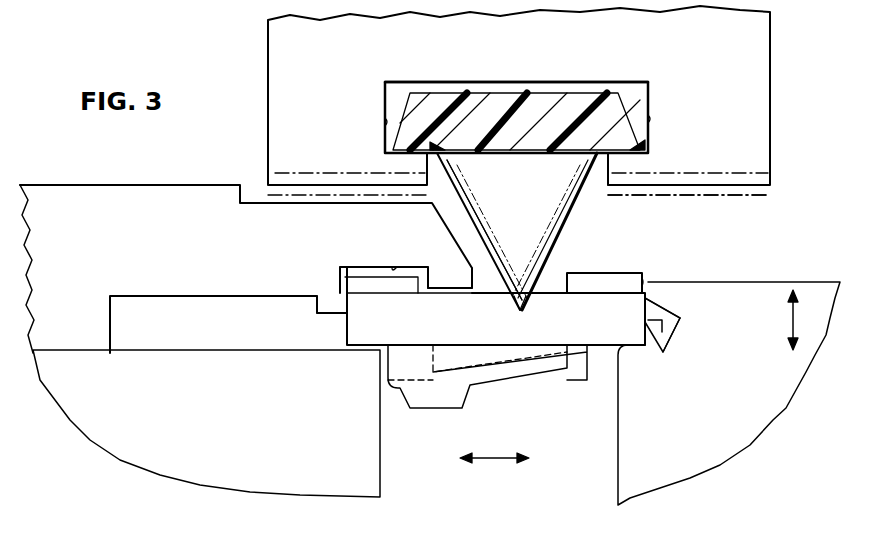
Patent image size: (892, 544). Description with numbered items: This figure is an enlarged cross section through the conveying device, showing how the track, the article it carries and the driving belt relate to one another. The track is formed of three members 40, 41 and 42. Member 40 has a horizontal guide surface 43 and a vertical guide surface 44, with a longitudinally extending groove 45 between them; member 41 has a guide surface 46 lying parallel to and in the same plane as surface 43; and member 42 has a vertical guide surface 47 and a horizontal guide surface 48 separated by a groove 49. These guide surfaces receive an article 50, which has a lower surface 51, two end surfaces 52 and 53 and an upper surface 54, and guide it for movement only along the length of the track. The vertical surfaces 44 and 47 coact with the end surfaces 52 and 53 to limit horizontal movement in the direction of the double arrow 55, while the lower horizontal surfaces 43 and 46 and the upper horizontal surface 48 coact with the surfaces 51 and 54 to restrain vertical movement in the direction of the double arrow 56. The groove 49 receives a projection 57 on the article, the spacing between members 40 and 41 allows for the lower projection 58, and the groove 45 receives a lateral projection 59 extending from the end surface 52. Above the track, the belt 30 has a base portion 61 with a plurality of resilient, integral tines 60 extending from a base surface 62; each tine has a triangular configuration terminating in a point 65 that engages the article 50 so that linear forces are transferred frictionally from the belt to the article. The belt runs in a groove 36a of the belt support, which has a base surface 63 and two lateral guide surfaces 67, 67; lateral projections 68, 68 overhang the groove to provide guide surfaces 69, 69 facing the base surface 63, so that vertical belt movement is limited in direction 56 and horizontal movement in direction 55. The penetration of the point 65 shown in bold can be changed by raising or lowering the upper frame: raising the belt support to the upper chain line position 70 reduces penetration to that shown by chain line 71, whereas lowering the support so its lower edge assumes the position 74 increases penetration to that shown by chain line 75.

The belt 30 is at (523, 114).
The groove 36a is at (385, 100).
The member 40 is at (730, 427).
The member 41 is at (285, 440).
The member 42 is at (200, 250).
The horizontal guide surface 43 is at (641, 347).
The vertical guide surface 44 is at (646, 280).
The groove 45 is at (680, 318).
The guide surface 46 is at (252, 354).
The vertical guide surface 47 is at (347, 277).
The horizontal guide surface 48 is at (440, 290).
The groove 49 is at (392, 267).
The article 50 is at (525, 277).
The lower surface 51 is at (520, 354).
The end surface 52 is at (648, 304).
The end surface 53 is at (346, 322).
The upper surface 54 is at (560, 292).
The double arrow 55 is at (495, 458).
The double arrow 56 is at (795, 318).
The projection 57 is at (378, 290).
The lower projection 58 is at (436, 396).
The lateral projection 59 is at (666, 350).
The tine 60 is at (517, 242).
The base portion 61 is at (538, 105).
The base surface 62 is at (526, 155).
The base surface 63 is at (486, 82).
The point 65 is at (524, 308).
The lateral guide surface 67 is at (385, 126).
The lateral projection 68 is at (618, 180).
The guide surface 69 is at (442, 152).
The upper chain line position 70 is at (758, 172).
The chain line 71 is at (492, 245).
The position 74 is at (760, 196).
The chain line 75 is at (496, 293).